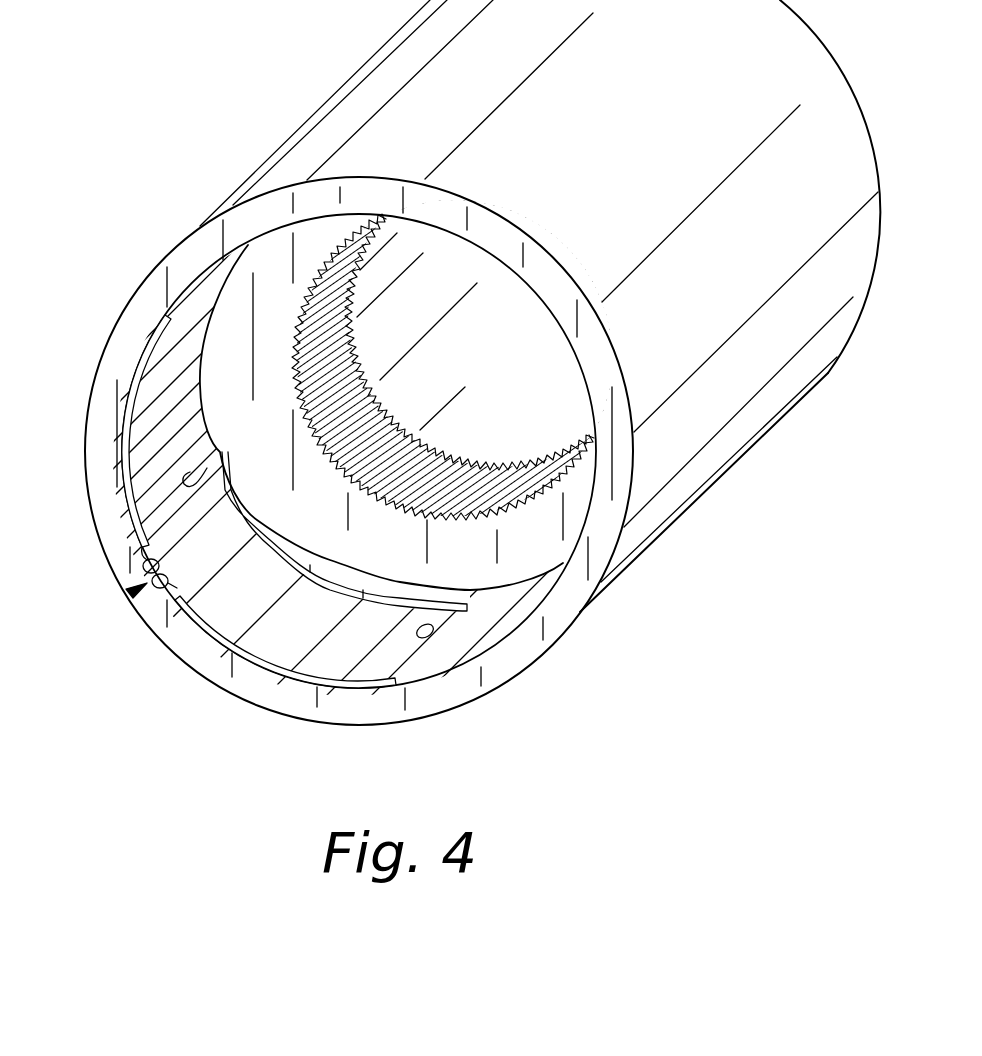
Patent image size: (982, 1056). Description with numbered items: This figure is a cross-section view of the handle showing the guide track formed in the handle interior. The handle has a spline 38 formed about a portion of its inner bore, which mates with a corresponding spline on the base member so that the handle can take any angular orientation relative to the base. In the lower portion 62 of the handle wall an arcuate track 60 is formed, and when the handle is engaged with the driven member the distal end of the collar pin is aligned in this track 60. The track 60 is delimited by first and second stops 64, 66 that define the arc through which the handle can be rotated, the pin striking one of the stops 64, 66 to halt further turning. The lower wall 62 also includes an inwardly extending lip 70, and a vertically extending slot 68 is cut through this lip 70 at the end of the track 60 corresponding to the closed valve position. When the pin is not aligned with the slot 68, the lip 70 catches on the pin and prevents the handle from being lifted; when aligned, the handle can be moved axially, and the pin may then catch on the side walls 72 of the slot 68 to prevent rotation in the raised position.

The spline 38 is at (453, 460).
The arcuate track 60 is at (350, 638).
The lower portion of the handle wall 62 is at (133, 500).
The first stop 64 is at (220, 448).
The second stop 66 is at (434, 628).
The vertically extending slot 68 is at (140, 600).
The inwardly extending lip 70 is at (290, 652).
The side walls of the slot 72 is at (147, 578).